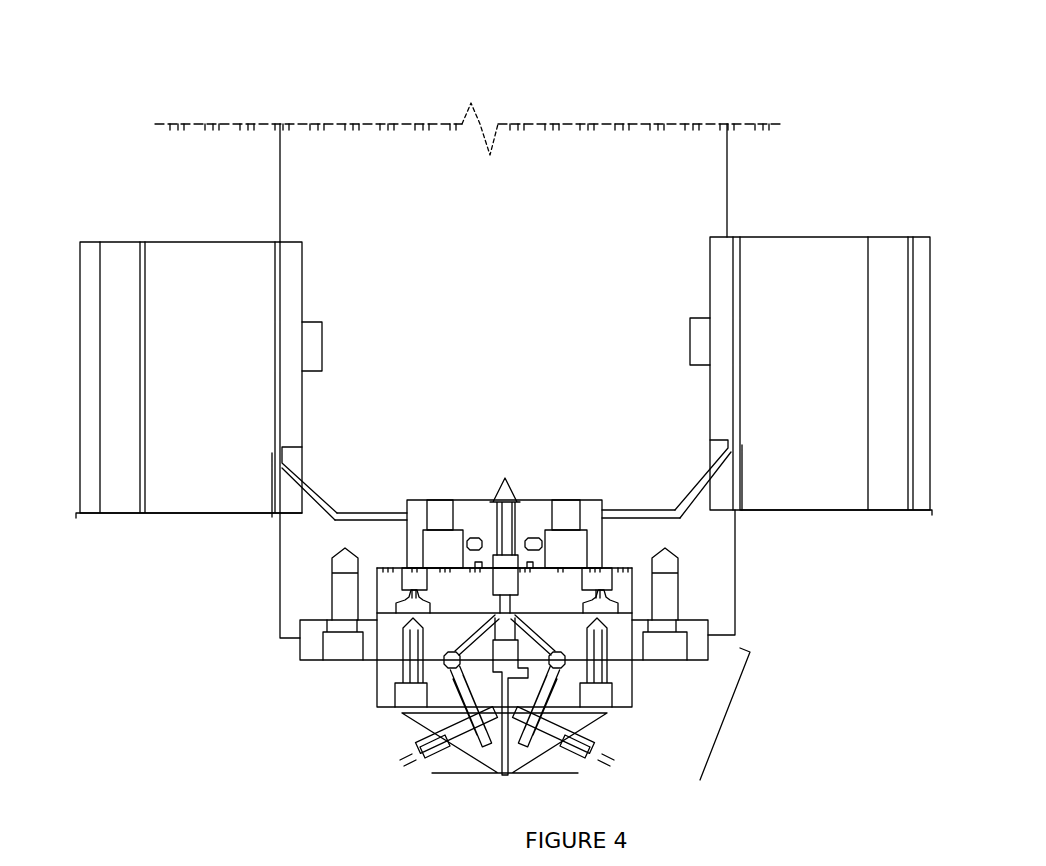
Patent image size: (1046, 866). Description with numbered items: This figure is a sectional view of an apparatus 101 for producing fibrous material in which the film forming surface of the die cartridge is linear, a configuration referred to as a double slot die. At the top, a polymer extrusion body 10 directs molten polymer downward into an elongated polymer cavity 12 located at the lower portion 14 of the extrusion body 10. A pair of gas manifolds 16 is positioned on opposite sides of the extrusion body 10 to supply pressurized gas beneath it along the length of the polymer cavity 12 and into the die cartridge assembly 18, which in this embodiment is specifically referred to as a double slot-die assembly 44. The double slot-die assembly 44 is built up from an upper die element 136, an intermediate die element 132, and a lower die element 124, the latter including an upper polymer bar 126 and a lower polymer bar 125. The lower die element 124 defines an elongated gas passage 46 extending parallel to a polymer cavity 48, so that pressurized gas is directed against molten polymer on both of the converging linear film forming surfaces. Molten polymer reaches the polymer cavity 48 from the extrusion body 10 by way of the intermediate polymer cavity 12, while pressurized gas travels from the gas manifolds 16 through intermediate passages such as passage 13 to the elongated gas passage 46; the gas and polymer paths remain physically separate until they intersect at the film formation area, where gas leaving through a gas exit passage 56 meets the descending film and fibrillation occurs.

The apparatus 101 is at (630, 66).
The polymer extrusion body 10 is at (375, 158).
The gas manifold 16 is at (210, 262).
The polymer cavity 12 is at (507, 468).
The intermediate gas passage 13 is at (325, 500).
The lower portion of extrusion body 14 is at (367, 503).
The upper die element 136 is at (622, 590).
The intermediate die element 132 is at (698, 655).
The double slot-die assembly 44 is at (270, 680).
The upper polymer bar 126 is at (385, 673).
The polymer cavity 48 is at (445, 683).
The elongated gas passage 46 is at (513, 690).
The gas exit passage 56 is at (490, 778).
The lower polymer bar 125 is at (453, 763).
The lower die element 124 is at (388, 717).
The die cartridge assembly 18 is at (731, 714).